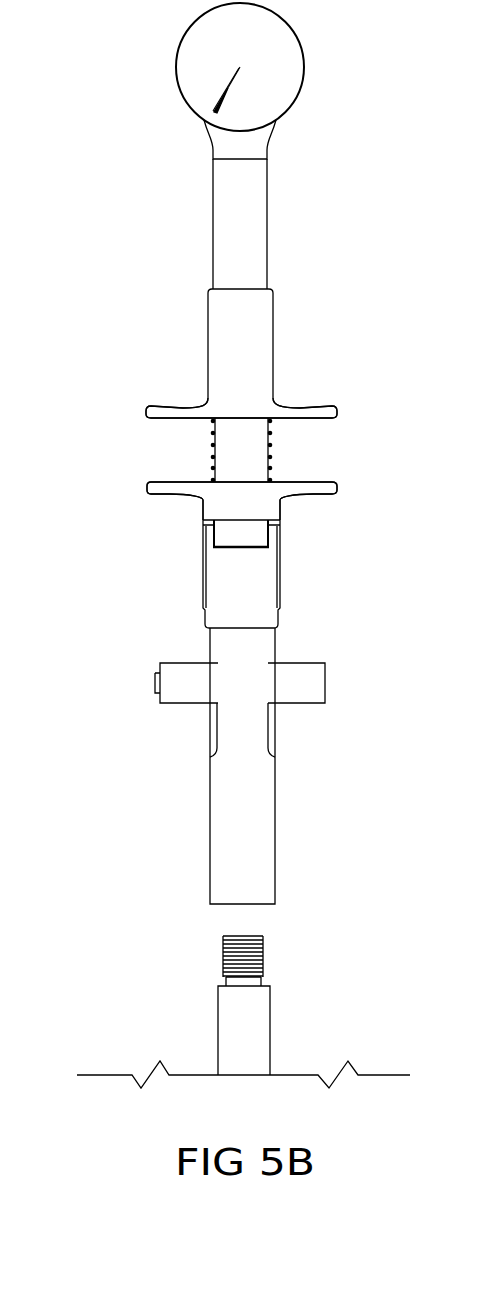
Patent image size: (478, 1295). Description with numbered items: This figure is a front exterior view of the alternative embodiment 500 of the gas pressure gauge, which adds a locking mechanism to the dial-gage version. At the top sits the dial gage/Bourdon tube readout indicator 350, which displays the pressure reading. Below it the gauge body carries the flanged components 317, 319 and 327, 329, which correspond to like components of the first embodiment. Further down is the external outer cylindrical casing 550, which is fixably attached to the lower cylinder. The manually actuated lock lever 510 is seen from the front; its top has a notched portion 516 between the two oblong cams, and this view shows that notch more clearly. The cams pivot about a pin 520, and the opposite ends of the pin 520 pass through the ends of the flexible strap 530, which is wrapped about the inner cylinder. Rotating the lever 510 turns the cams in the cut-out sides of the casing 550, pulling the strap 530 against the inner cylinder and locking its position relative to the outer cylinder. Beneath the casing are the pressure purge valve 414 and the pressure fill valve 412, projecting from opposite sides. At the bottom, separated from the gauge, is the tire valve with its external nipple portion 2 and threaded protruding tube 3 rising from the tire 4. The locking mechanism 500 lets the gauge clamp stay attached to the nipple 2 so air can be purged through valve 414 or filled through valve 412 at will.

The dial gage/Bourdon tube readout indicator 350 is at (303, 68).
The alternative embodiment with lock lever 500 is at (160, 212).
The component corresponding to component 19 319 is at (145, 412).
The component corresponding to component 17 317 is at (338, 410).
The component corresponding to component 29 329 is at (145, 488).
The component corresponding to component 27 327 is at (338, 488).
The pin 520 is at (238, 545).
The flexible strap 530 is at (275, 538).
The notched portion 516 is at (240, 547).
The external outer cylindrical casing 550 is at (280, 580).
The lock lever 510 is at (280, 618).
The pressure purge valve 414 is at (183, 663).
The pressure fill valve 412 is at (326, 680).
The threaded protruding tube 3 is at (263, 958).
The external nipple portion 2 is at (270, 1028).
The tire 4 is at (102, 1075).